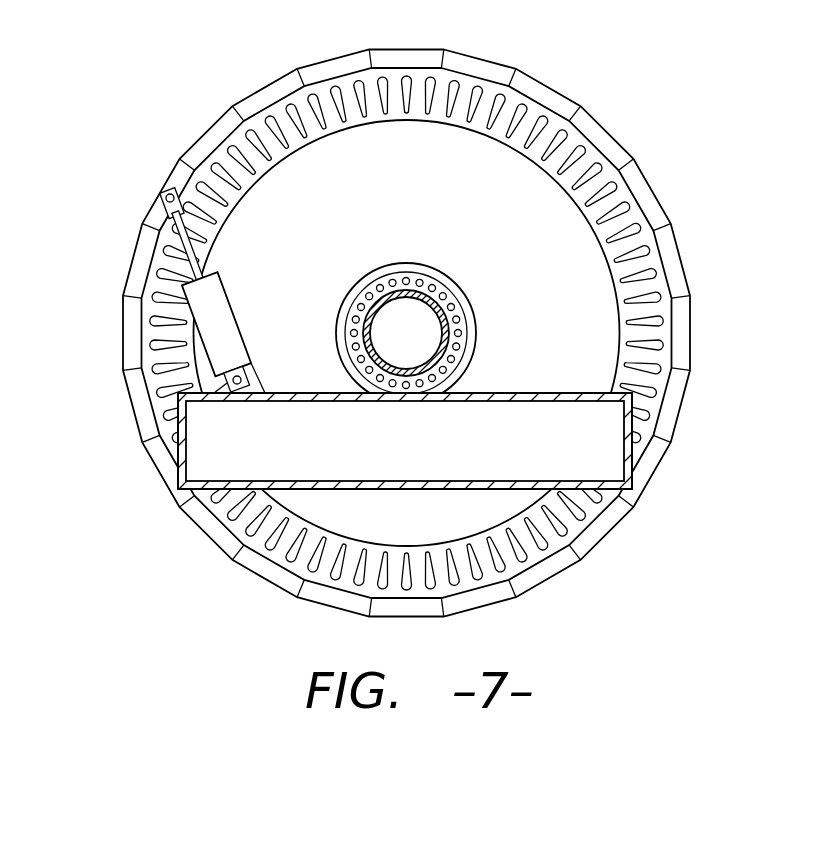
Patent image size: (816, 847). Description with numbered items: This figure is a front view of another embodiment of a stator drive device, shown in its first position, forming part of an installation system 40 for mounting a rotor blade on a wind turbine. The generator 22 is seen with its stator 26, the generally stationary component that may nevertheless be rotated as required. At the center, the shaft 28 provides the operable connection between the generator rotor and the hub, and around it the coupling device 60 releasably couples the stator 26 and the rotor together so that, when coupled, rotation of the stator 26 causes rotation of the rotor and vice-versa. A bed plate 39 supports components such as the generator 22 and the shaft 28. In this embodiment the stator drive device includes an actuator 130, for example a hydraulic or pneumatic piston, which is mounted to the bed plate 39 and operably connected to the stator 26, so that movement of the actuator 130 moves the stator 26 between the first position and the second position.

The generator 22 is at (617, 80).
The stator 26 is at (647, 200).
The shaft 28 is at (418, 333).
The bed plate 39 is at (180, 425).
The installation system 40 is at (401, 318).
The coupling device 60 is at (434, 302).
The actuator 130 is at (210, 308).